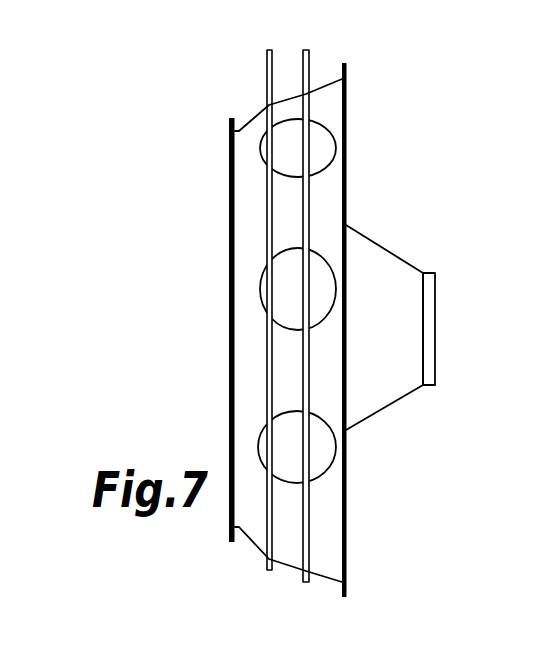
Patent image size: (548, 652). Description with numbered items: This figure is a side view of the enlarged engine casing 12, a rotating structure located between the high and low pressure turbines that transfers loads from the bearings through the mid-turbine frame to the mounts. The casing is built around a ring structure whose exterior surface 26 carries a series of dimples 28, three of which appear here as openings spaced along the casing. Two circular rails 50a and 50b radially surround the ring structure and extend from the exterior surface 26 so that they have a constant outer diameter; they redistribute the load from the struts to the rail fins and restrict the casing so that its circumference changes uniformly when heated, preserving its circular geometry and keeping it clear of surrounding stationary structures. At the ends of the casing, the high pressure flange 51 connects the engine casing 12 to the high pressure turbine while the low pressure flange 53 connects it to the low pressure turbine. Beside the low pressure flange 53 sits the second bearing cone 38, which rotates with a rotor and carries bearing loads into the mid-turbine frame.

The engine casing 12 is at (272, 323).
The exterior surface 26 is at (334, 175).
The dimples 28 is at (283, 293).
The second bearing cone 38 is at (382, 270).
The rail 50a is at (263, 228).
The rail 50b is at (307, 213).
The high pressure flange 51 is at (232, 124).
The low pressure flange 53 is at (346, 76).